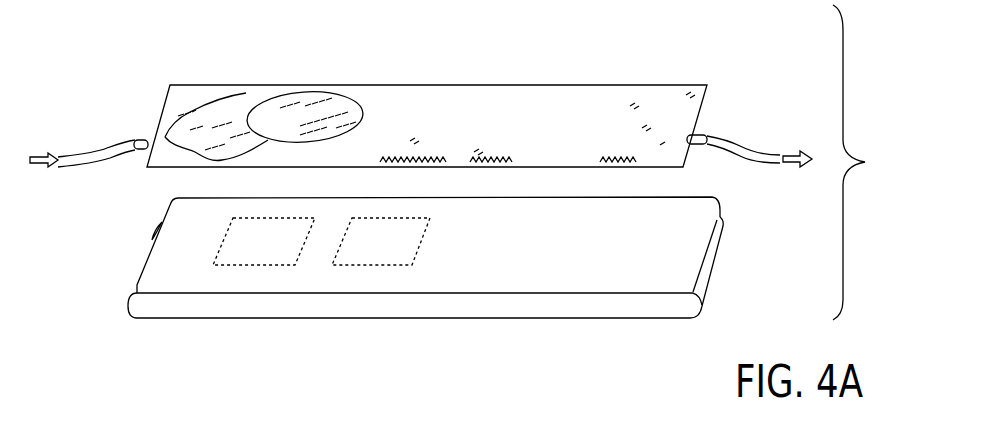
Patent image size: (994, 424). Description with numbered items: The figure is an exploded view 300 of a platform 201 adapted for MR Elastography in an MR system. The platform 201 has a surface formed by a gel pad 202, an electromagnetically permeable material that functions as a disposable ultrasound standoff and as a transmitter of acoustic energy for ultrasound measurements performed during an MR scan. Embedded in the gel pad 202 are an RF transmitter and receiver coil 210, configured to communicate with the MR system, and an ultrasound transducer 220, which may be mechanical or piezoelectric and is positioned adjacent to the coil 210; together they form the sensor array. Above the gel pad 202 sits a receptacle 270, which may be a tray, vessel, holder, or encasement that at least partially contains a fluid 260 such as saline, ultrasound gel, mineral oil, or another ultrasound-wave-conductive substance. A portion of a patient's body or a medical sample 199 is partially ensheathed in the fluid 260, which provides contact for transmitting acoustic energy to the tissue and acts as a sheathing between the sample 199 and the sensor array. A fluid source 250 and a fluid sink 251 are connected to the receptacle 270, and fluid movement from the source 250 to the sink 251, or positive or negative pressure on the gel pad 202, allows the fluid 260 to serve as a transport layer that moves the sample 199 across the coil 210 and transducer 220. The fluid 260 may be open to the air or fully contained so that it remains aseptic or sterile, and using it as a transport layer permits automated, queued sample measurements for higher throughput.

The sample 199 is at (268, 118).
The platform 201 is at (122, 346).
The gel pad 202 is at (137, 275).
The RF transmitter and receiver coil 210 is at (264, 241).
The ultrasound transducer 220 is at (381, 241).
The fluid source 250 is at (47, 155).
The fluid sink 251 is at (806, 152).
The fluid 260 is at (218, 123).
The receptacle 270 is at (469, 85).
The exploded view 300 is at (875, 162).